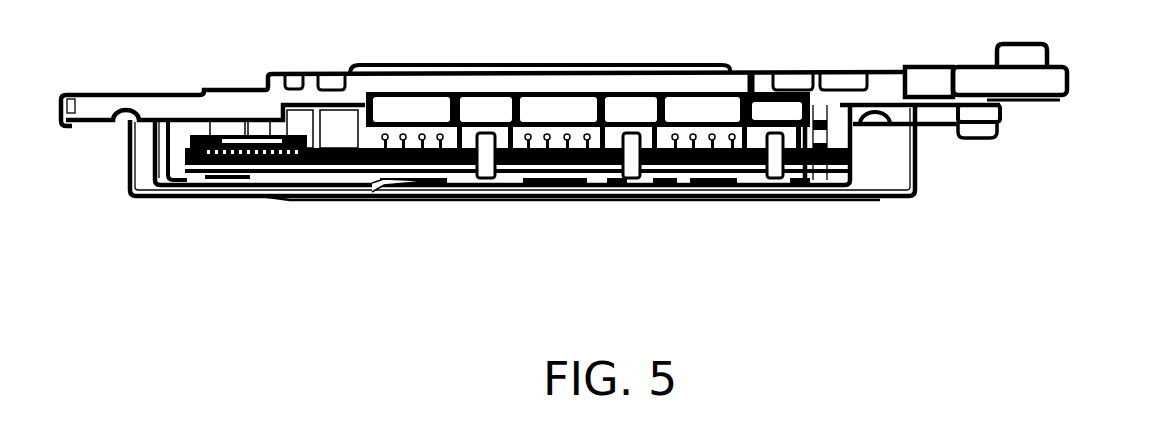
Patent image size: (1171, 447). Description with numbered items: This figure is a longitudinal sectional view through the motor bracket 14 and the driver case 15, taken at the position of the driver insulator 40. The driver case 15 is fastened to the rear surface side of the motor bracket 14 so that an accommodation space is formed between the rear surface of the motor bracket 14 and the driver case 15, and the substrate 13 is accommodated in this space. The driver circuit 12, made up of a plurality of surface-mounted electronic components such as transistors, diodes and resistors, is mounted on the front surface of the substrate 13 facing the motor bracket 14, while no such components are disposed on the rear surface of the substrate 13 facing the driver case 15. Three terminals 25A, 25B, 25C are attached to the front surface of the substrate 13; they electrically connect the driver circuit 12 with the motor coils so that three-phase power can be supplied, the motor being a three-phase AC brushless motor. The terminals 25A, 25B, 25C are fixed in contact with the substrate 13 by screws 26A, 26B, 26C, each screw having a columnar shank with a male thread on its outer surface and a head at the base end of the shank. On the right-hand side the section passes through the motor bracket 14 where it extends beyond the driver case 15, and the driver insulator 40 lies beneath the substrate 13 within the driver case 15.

The driver circuit 12 is at (250, 122).
The substrate 13 is at (290, 188).
The motor bracket 14 is at (1070, 82).
The driver case 15 is at (153, 162).
The terminal 25A is at (715, 125).
The terminal 25B is at (568, 122).
The terminal 25C is at (423, 122).
The screw 26A is at (776, 135).
The screw 26B is at (632, 135).
The screw 26C is at (487, 135).
The driver insulator 40 is at (373, 193).